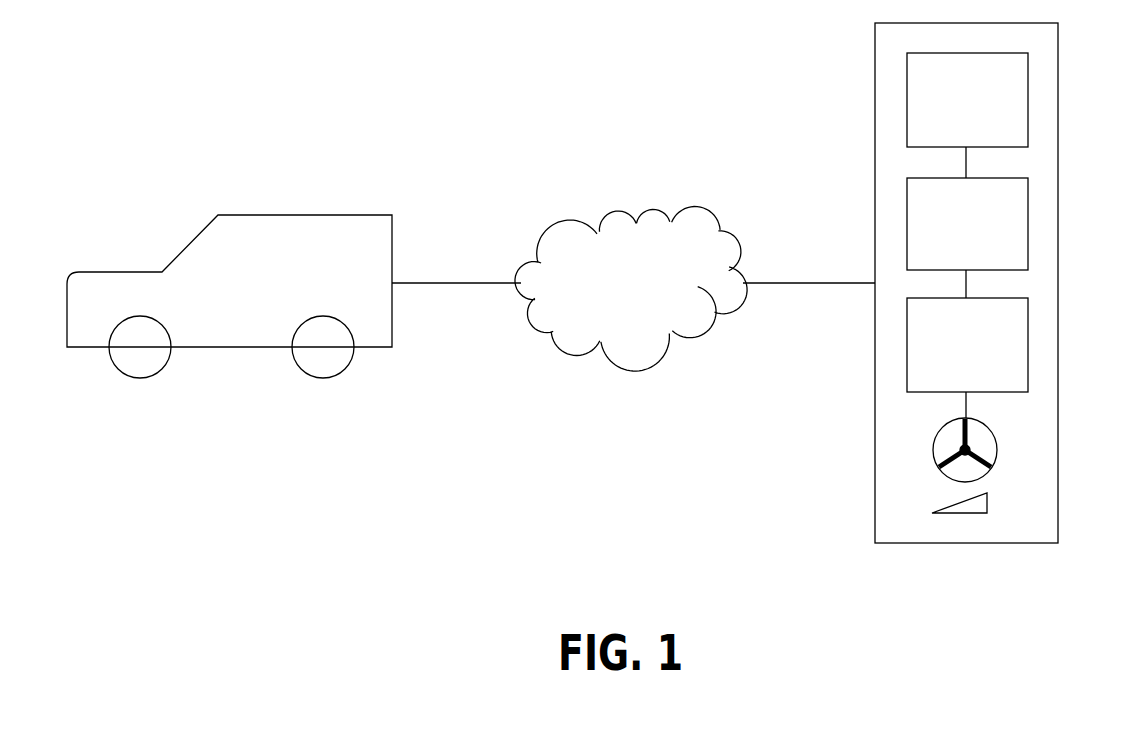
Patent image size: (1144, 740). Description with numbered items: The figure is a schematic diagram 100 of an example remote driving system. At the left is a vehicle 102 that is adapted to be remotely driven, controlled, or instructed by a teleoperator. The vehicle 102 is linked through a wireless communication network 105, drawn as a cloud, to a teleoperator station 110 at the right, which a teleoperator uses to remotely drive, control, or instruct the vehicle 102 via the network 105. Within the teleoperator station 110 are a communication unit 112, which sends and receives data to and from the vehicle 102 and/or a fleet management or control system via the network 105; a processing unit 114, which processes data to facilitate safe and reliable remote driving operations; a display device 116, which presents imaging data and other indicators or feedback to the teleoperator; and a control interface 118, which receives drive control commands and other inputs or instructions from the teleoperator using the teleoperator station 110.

The schematic diagram 100 is at (514, 83).
The vehicle 102 is at (392, 225).
The wireless communication network 105 is at (710, 213).
The teleoperator station 110 is at (875, 407).
The communication unit 112 is at (1028, 343).
The processing unit 114 is at (1028, 222).
The display device 116 is at (1028, 95).
The control interface 118 is at (1020, 455).